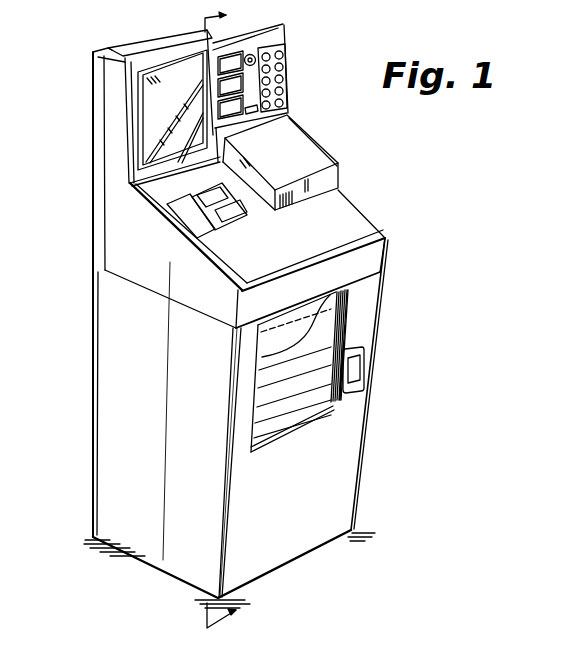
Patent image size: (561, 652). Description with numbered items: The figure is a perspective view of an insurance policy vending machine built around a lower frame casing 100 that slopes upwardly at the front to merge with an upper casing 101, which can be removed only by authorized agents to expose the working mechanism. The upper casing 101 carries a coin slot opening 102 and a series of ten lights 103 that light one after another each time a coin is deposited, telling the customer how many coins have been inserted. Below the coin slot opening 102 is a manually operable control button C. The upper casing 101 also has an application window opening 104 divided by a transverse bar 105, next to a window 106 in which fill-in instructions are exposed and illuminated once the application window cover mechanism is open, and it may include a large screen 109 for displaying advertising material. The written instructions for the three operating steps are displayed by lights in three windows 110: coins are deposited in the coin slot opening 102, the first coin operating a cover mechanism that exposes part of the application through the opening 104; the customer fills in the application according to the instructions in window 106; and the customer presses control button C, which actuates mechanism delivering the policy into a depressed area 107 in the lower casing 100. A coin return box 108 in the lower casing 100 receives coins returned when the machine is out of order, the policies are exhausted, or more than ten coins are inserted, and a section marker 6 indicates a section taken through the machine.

The lower frame casing 100 is at (362, 476).
The upper casing 101 is at (388, 238).
The coin slot opening 102 is at (255, 55).
The lights 103 is at (274, 83).
The application window opening 104 is at (224, 200).
The transverse bar 105 is at (214, 203).
The window 106 is at (204, 226).
The depressed area 107 is at (337, 300).
The coin return box 108 is at (364, 359).
The screen 109 is at (145, 128).
The windows 110 is at (228, 117).
The control button C is at (252, 115).
The section line 6- 6 is at (226, 321).